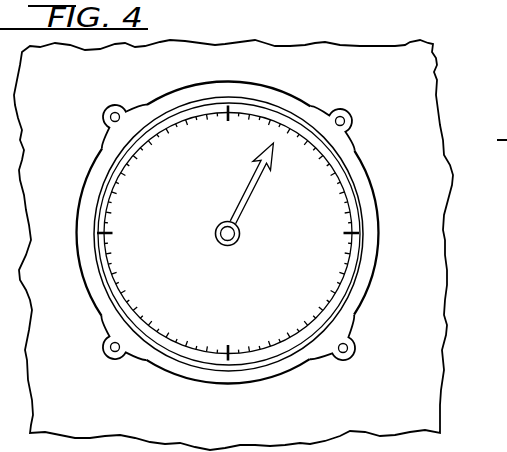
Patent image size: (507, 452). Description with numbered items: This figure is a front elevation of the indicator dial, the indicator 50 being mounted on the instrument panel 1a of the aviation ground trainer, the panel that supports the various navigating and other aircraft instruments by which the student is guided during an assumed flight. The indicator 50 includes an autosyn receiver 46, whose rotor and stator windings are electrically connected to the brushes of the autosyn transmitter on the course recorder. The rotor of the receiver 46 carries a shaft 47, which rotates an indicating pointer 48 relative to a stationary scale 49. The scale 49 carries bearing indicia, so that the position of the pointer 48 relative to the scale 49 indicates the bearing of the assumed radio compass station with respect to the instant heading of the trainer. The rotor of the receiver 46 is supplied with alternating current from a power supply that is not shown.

The instrument panel 1a is at (432, 76).
The autosyn receiver 46 is at (345, 318).
The shaft 47 is at (233, 234).
The indicating pointer 48 is at (249, 197).
The stationary scale 49 is at (222, 352).
The indicator 50 is at (381, 284).